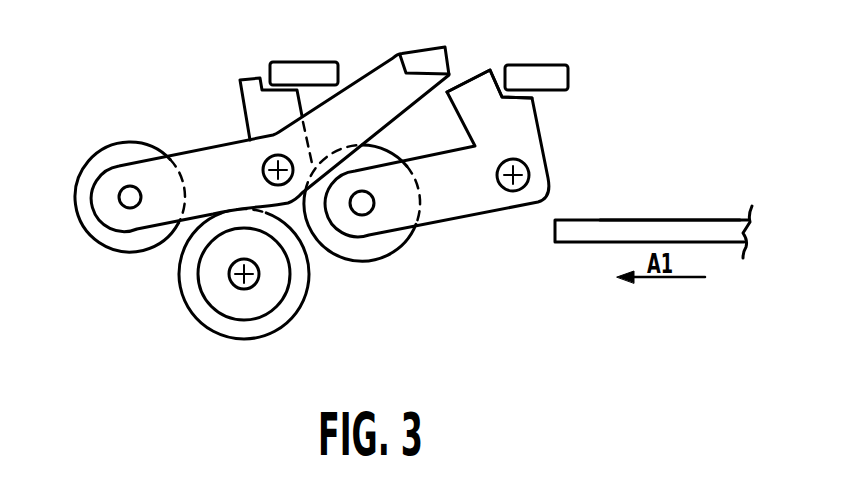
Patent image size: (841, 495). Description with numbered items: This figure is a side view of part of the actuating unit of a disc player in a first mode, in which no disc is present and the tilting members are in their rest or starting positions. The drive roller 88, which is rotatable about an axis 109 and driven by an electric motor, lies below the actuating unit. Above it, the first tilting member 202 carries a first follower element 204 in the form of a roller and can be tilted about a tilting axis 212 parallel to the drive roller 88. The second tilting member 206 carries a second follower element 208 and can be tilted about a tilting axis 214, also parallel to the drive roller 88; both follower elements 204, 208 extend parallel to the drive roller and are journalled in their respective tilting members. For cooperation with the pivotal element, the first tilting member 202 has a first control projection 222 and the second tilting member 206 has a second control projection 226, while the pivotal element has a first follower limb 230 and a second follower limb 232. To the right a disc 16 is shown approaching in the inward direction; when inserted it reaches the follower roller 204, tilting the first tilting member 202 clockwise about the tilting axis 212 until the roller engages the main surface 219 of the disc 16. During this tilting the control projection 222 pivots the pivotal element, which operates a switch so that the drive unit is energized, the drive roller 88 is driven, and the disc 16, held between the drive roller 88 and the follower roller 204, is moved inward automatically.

The disc 16 is at (580, 235).
The drive roller 88 is at (293, 305).
The axis 109 is at (244, 274).
The first tilting member 202 is at (527, 123).
The first follower element 204 is at (390, 243).
The second tilting member 206 is at (193, 167).
The second follower element 208 is at (110, 238).
The tilting axis 212 is at (529, 183).
The tilting axis 214 is at (263, 155).
The main surface 219 is at (687, 220).
The first control projection 222 is at (477, 88).
The second control projection 226 is at (249, 88).
The first follower limb 230 is at (552, 78).
The second follower limb 232 is at (322, 73).